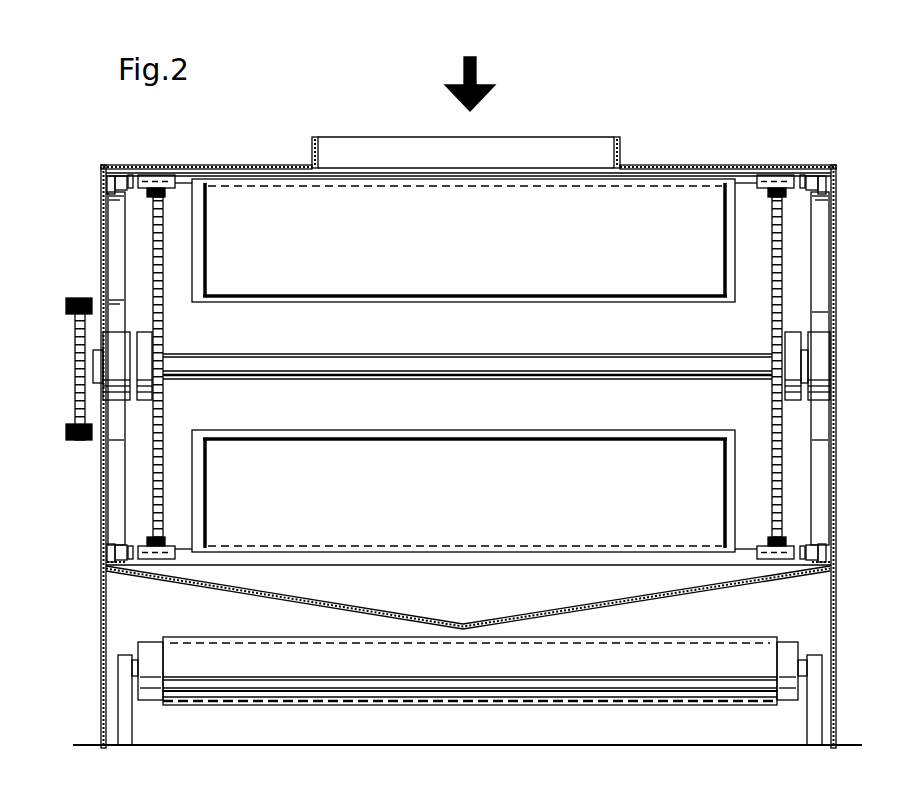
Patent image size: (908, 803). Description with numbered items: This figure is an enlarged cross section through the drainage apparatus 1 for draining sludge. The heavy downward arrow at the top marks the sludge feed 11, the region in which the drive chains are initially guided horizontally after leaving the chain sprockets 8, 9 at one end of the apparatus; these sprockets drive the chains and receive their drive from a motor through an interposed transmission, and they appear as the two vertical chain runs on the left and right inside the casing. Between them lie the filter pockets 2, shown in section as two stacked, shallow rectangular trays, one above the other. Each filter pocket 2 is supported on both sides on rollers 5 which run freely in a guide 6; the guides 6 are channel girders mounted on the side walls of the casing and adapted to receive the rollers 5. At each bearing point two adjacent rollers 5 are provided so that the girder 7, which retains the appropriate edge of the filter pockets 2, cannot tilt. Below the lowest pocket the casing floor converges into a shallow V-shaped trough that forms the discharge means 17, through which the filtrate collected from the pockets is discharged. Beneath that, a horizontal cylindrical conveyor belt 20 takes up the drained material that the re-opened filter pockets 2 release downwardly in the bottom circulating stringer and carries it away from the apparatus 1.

The drainage apparatus 1 is at (686, 153).
The filter pockets 2 is at (466, 272).
The rollers 5 is at (122, 178).
The guide 6 is at (104, 178).
The girder 7 is at (181, 190).
The chain sprocket 8 is at (163, 314).
The chain sprocket 9 is at (774, 320).
The sludge feed 11 is at (478, 70).
The discharge means for the filtrate 17 is at (502, 620).
The conveyor belt 20 is at (332, 694).